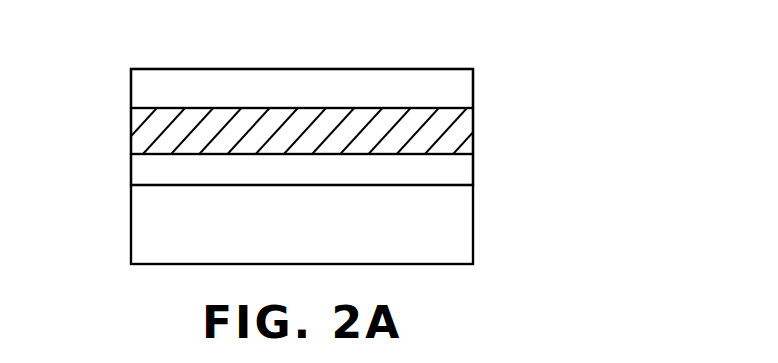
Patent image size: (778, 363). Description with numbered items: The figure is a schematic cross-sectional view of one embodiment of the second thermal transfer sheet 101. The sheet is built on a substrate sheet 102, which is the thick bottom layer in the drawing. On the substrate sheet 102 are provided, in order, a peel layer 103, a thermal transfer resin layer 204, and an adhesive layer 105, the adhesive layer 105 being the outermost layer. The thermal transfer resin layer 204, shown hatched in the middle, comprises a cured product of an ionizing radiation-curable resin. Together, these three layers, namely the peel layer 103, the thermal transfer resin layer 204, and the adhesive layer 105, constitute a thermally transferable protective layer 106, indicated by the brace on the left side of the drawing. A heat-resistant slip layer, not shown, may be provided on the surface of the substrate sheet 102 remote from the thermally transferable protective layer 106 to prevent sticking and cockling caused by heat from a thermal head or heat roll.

The second thermal transfer sheet 101 is at (416, 58).
The thermally transferable protective layer 106 is at (115, 70).
The adhesive layer 105 is at (463, 95).
The thermal transfer resin layer 204 is at (463, 132).
The peel layer 103 is at (463, 171).
The substrate sheet 102 is at (463, 227).